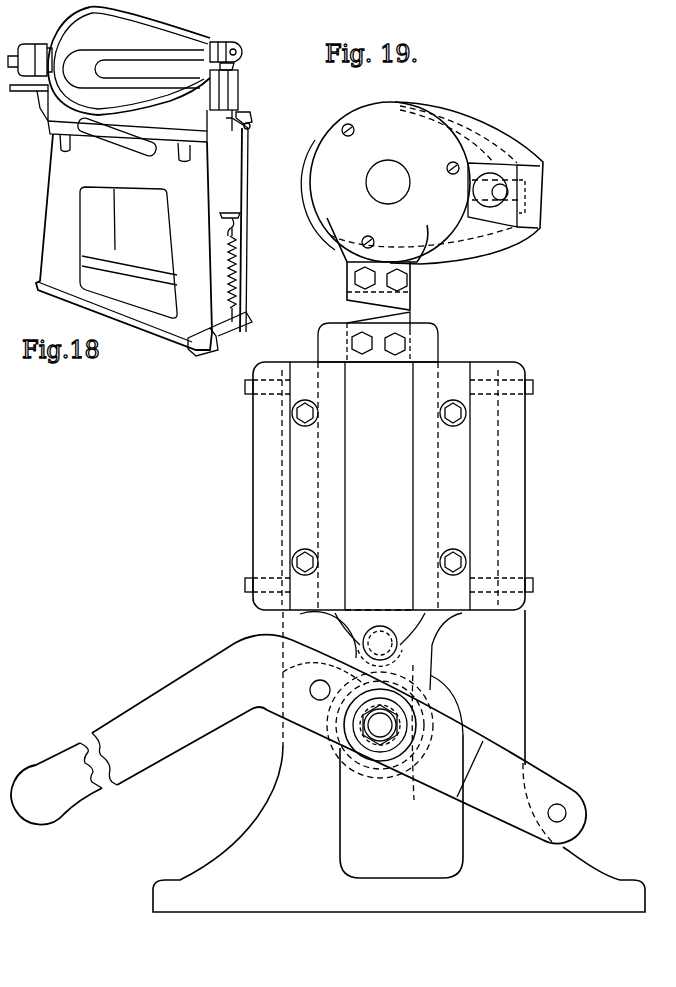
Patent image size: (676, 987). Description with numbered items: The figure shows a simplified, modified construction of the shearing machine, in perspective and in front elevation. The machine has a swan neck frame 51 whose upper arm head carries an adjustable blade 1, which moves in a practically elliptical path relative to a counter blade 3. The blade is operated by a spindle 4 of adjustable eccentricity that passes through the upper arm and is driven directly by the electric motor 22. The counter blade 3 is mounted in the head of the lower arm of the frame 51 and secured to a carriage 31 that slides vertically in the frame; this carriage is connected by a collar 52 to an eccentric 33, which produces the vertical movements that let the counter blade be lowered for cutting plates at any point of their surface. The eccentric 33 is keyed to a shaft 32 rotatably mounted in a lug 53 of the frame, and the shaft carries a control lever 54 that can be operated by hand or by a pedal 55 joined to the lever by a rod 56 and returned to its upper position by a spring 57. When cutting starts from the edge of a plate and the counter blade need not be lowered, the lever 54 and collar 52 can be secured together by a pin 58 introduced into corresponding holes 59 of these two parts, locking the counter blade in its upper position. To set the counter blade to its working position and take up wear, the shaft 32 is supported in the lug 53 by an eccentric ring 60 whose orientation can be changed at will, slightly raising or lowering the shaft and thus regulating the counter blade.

In FIG. 18, the electric motor 22 is at (33, 50).
In FIG. 18, the swan neck frame 51 is at (129, 82).
In FIG. 18, the blade 1 is at (215, 67).
In FIG. 19, the blade 1 is at (396, 299).
In FIG. 18, the counter blade 3 is at (232, 65).
In FIG. 19, the counter blade 3 is at (400, 318).
In FIG. 18, the pin 58 is at (250, 116).
In FIG. 18, the control lever 54 is at (208, 148).
In FIG. 19, the control lever 54 is at (298, 739).
In FIG. 18, the rod 56 is at (242, 214).
In FIG. 18, the spring 57 is at (236, 252).
In FIG. 18, the pedal 55 is at (198, 348).
In FIG. 19, the spindle 4 is at (385, 182).
In FIG. 19, the carriage 31 is at (389, 486).
In FIG. 19, the lug 53 is at (330, 631).
In FIG. 19, the eccentric 33 is at (393, 677).
In FIG. 19, the holes 59 is at (308, 689).
In FIG. 19, the collar 52 is at (334, 757).
In FIG. 19, the shaft 32 is at (379, 730).
In FIG. 19, the eccentric ring 60 is at (414, 790).